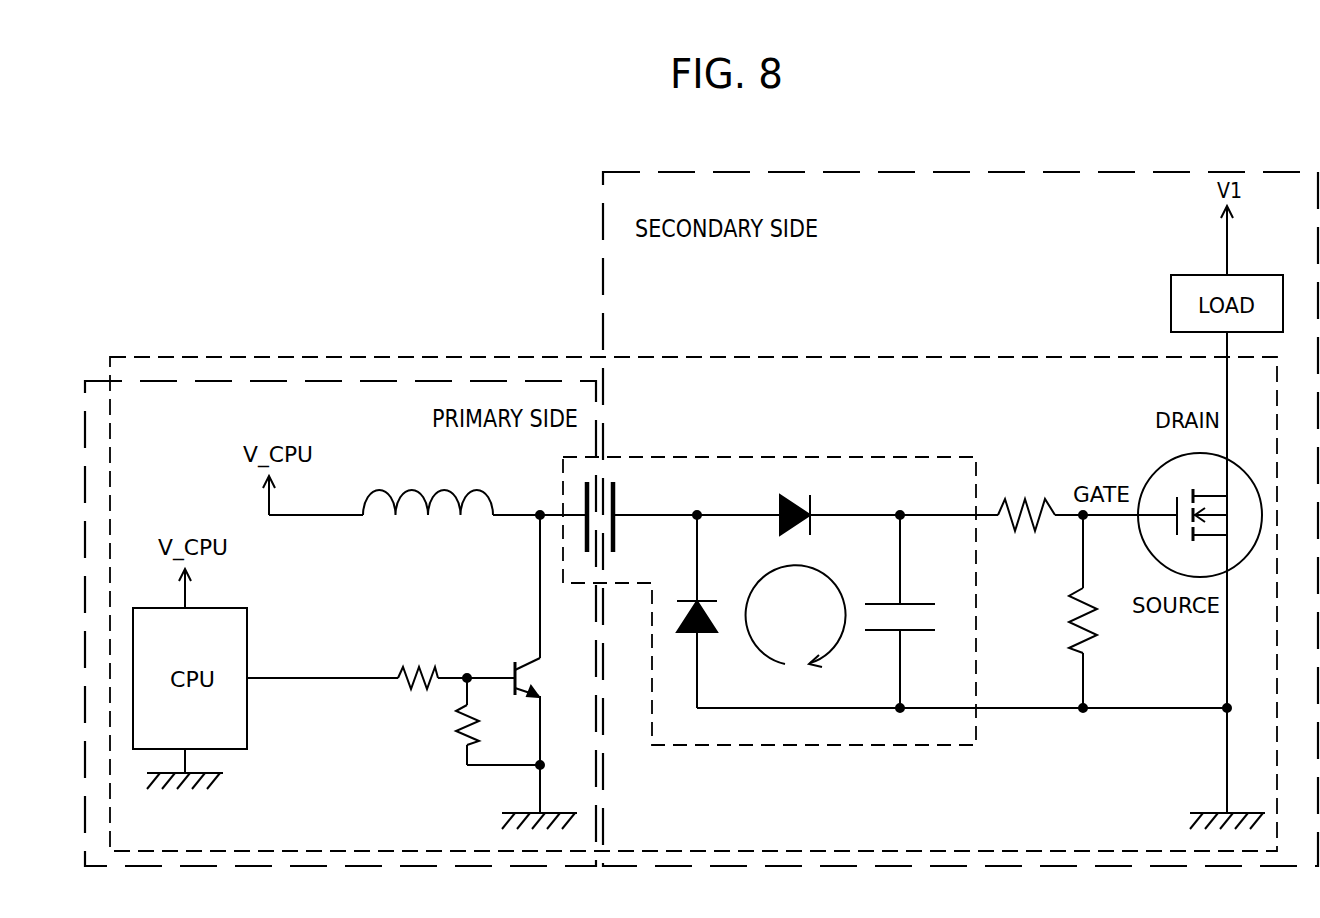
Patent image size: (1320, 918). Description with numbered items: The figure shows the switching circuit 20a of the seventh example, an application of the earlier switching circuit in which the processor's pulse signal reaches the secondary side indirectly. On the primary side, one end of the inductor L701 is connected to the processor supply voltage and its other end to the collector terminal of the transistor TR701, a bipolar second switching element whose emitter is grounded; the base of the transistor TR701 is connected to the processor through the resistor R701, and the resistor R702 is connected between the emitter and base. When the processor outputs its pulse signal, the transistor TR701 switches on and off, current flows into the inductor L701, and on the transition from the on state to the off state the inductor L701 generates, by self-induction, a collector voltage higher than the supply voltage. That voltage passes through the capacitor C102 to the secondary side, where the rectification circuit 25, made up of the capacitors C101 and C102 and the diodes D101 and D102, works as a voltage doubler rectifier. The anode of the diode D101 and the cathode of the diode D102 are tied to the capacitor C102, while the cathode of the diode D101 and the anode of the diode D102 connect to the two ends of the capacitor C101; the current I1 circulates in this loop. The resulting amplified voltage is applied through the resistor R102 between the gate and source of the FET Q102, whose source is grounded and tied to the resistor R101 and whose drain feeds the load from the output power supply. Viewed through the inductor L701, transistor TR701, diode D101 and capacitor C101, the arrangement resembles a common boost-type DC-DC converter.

The switching circuit 20a is at (328, 357).
The rectification circuit 25 is at (807, 457).
The inductor L701 is at (428, 484).
The capacitor C102 is at (629, 514).
The transistor TR701 is at (502, 664).
The resistor R701 is at (417, 662).
The resistor R702 is at (439, 721).
The diode D101 is at (766, 510).
The diode D102 is at (714, 611).
The capacitor C101 is at (911, 611).
The resistor R102 is at (1026, 496).
The resistor R101 is at (1057, 611).
The FET Q102 is at (1187, 506).
The current I1 is at (817, 565).